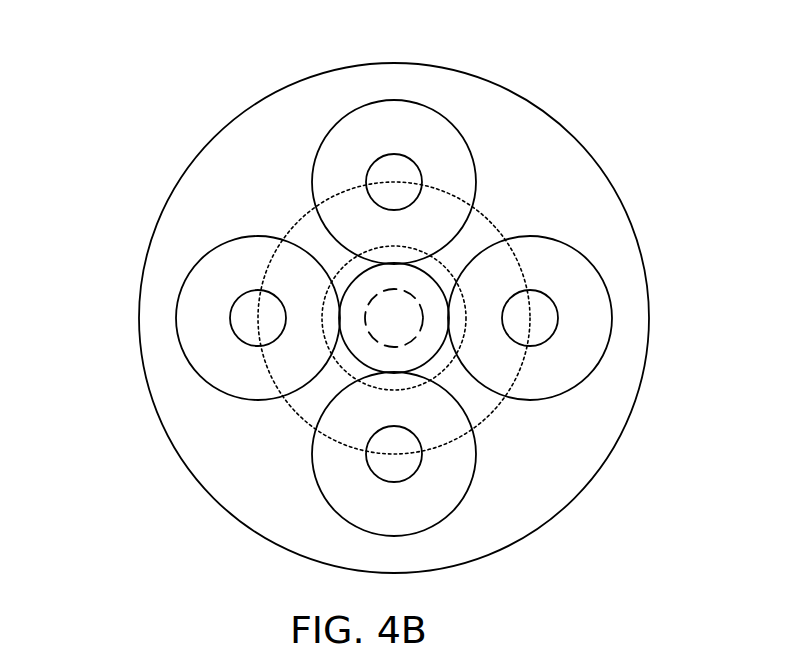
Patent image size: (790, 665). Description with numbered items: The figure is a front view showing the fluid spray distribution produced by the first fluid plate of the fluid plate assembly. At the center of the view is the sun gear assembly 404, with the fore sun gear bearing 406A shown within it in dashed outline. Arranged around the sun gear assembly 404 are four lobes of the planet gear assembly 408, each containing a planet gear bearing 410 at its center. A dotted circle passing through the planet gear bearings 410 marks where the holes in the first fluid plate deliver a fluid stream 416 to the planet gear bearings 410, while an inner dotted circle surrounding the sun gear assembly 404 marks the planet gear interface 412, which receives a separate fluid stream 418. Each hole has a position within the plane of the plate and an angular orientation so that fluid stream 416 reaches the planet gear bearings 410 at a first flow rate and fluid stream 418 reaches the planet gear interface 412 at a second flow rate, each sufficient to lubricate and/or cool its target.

The sun gear assembly 404 is at (443, 347).
The fore sun gear bearing 406A is at (413, 337).
The planet gear assembly 408 is at (313, 160).
The planet gear bearings 410 is at (367, 180).
The planet gear interface 412 is at (500, 247).
The fluid stream 416 is at (300, 220).
The fluid stream 418 is at (443, 263).